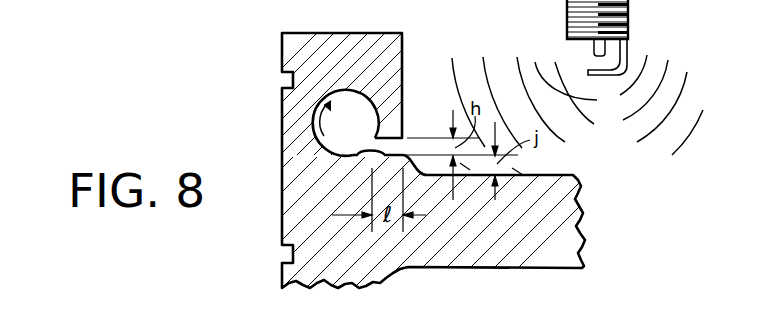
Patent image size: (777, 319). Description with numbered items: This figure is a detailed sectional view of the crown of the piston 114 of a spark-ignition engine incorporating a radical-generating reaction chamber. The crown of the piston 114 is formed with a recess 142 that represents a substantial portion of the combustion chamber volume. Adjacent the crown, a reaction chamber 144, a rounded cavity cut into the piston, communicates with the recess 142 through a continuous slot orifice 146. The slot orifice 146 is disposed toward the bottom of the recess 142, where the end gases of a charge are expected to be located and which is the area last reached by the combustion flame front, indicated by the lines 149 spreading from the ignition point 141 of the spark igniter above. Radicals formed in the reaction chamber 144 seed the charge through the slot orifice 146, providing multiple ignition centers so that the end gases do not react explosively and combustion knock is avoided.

The recess 142 is at (402, 53).
The reaction chamber 144 is at (292, 96).
The continuous slot orifice 146 is at (367, 156).
The piston 114 is at (402, 277).
The combustion flame front lines 149 is at (506, 58).
The ignition point 141 is at (605, 77).